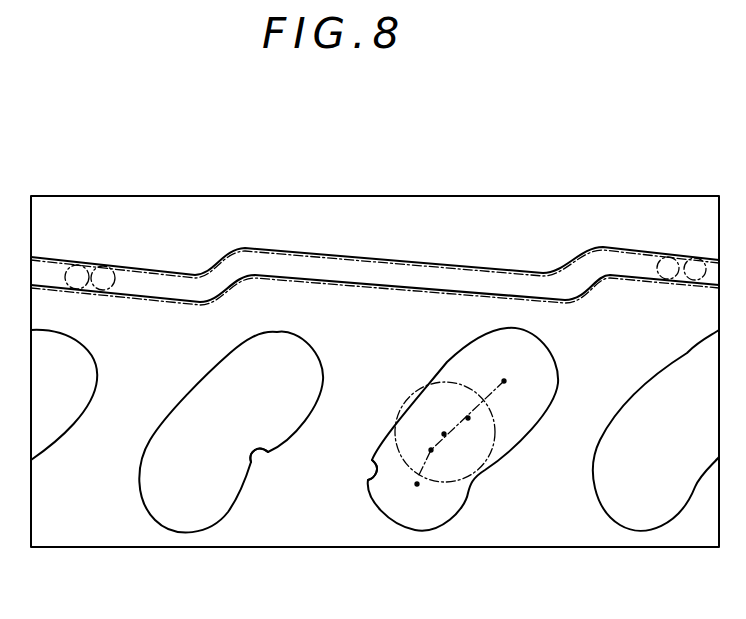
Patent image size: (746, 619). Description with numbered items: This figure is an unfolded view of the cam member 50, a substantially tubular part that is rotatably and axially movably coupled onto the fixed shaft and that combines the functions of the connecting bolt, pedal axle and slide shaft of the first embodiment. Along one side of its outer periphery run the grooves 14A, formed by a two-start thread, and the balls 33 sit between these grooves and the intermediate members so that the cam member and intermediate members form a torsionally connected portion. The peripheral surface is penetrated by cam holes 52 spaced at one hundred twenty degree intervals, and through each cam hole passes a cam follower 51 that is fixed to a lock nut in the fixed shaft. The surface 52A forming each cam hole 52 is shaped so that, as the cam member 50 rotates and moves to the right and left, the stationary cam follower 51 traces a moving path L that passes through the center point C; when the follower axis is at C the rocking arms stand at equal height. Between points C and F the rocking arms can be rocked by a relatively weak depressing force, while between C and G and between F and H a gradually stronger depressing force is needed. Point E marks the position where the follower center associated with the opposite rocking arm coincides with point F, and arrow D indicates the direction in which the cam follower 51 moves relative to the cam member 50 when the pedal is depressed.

The cam member 50 is at (578, 192).
The grooves 14A is at (462, 270).
The balls 33 is at (78, 272).
The cam hole 52 is at (148, 478).
The surface 52A is at (369, 463).
The cam follower 51 is at (414, 407).
The moving path L is at (440, 385).
The direction D is at (415, 313).
The point G is at (417, 484).
The point E is at (431, 450).
The center point C is at (444, 434).
The point F is at (468, 418).
The point H is at (504, 381).